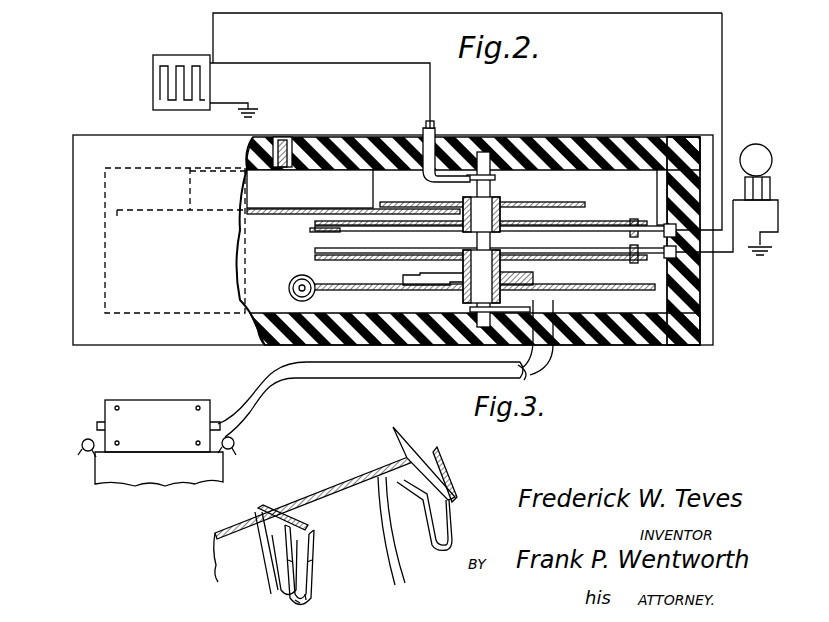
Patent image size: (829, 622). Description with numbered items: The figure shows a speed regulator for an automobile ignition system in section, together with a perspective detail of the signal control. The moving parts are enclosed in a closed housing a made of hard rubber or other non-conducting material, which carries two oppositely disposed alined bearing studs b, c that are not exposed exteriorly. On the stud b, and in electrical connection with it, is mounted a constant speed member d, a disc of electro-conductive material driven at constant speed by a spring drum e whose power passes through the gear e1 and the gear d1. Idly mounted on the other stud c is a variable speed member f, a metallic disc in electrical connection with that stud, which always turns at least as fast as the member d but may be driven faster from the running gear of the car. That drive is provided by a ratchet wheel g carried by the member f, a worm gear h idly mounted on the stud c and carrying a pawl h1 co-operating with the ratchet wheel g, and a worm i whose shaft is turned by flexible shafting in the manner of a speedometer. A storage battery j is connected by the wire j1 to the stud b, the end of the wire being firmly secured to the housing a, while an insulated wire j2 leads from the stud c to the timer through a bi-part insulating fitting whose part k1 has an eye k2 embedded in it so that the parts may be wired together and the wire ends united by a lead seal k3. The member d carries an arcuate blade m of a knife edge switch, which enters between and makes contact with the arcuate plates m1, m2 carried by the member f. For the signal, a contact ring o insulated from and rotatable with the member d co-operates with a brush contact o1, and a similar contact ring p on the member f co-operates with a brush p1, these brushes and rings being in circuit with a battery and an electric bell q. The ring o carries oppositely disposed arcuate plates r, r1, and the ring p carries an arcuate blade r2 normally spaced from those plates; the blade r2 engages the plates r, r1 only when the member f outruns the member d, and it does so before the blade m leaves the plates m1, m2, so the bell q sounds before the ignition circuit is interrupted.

In FIG. 2, the closed housing a is at (90, 262).
In FIG. 2, the bearing stud b is at (513, 137).
In FIG. 2, the bearing stud c is at (470, 340).
In FIG. 2, the constant speed member d is at (598, 222).
In FIG. 3, the constant speed member d is at (338, 492).
In FIG. 2, the gear d1 is at (549, 205).
In FIG. 2, the spring drum e is at (310, 189).
In FIG. 2, the gear e1 is at (282, 213).
In FIG. 2, the variable speed member f is at (318, 260).
In FIG. 2, the ratchet wheel g is at (535, 278).
In FIG. 2, the worm gear h is at (345, 345).
In FIG. 2, the pawl h1 is at (400, 278).
In FIG. 2, the worm i is at (289, 290).
In FIG. 2, the storage battery j is at (150, 73).
In FIG. 2, the wire j1 is at (330, 64).
In FIG. 2, the insulated wire j2 is at (372, 368).
In FIG. 2, the fitting part k1 is at (155, 405).
In FIG. 2, the eye or staple k2 is at (98, 424).
In FIG. 2, the lead seal k3 is at (84, 441).
In FIG. 3, the arcuate blade m is at (272, 510).
In FIG. 3, the arcuate plate m1 is at (283, 565).
In FIG. 3, the arcuate plate m2 is at (312, 540).
In FIG. 2, the contact ring o is at (667, 137).
In FIG. 3, the contact ring o is at (455, 470).
In FIG. 2, the brush contact o1 is at (686, 137).
In FIG. 2, the contact ring p is at (312, 250).
In FIG. 2, the brush p1 is at (702, 275).
In FIG. 2, the electric bell q is at (757, 146).
In FIG. 3, the arcuate plate r is at (425, 518).
In FIG. 3, the arcuate plate r1 is at (440, 512).
In FIG. 3, the arcuate blade r2 is at (430, 450).